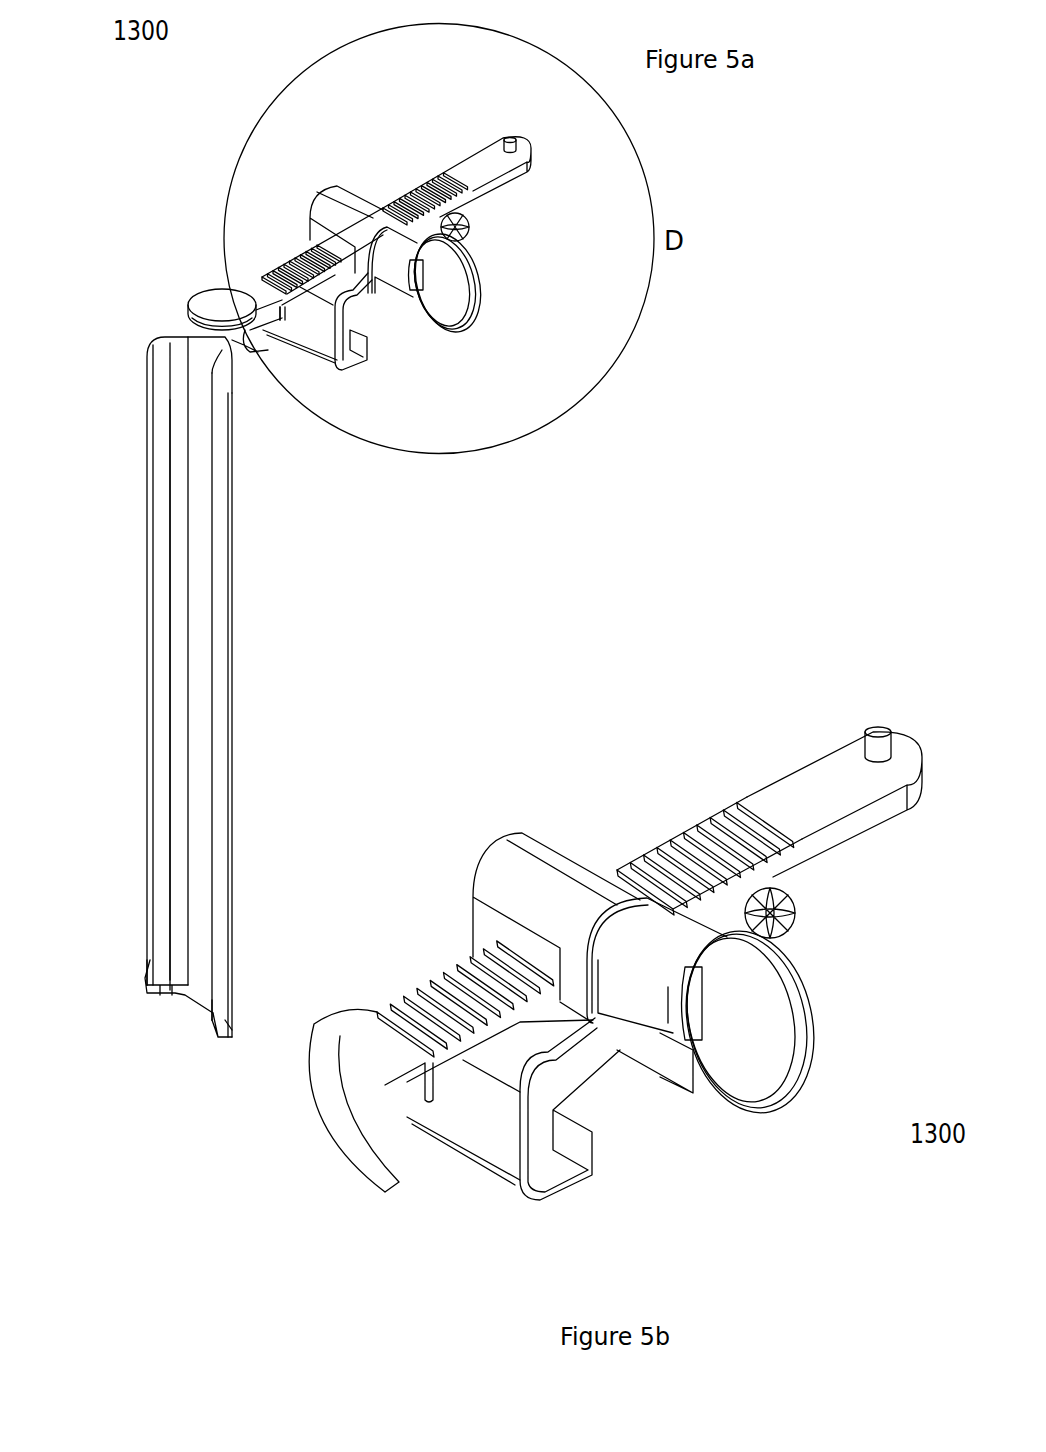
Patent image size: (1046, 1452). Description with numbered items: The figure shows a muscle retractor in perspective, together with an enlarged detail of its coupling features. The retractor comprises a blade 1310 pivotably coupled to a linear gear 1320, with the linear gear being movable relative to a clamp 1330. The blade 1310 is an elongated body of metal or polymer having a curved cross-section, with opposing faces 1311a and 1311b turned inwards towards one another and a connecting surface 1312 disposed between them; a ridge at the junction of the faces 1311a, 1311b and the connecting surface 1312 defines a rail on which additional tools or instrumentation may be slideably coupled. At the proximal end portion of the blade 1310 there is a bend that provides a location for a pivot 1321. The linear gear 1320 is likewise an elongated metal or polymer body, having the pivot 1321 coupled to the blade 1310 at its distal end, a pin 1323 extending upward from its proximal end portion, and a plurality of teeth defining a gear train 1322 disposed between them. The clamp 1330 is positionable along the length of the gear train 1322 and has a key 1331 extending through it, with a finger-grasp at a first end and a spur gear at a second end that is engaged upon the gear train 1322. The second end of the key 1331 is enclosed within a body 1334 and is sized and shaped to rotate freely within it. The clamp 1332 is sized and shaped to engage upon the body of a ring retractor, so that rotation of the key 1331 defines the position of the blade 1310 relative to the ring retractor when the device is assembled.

In FIG. 5A, the blade 1310 is at (203, 630).
In FIG. 5A, the opposing face 1311a is at (148, 957).
In FIG. 5A, the opposing face 1311b is at (220, 997).
In FIG. 5A, the connecting surface 1312 is at (200, 748).
In FIG. 5A, the linear gear 1320 is at (481, 167).
In FIG. 5B, the linear gear 1320 is at (813, 782).
In FIG. 5A, the pivot 1321 is at (218, 303).
In FIG. 5A, the gear train 1322 is at (440, 185).
In FIG. 5B, the gear train 1322 is at (702, 852).
In FIG. 5A, the pin 1323 is at (503, 133).
In FIG. 5B, the pin 1323 is at (870, 738).
In FIG. 5A, the clamp 1330 is at (374, 313).
In FIG. 5A, the key 1331 is at (449, 288).
In FIG. 5B, the key 1331 is at (742, 1005).
In FIG. 5B, the clamp 1332 is at (578, 1150).
In FIG. 5B, the body 1334 is at (540, 905).